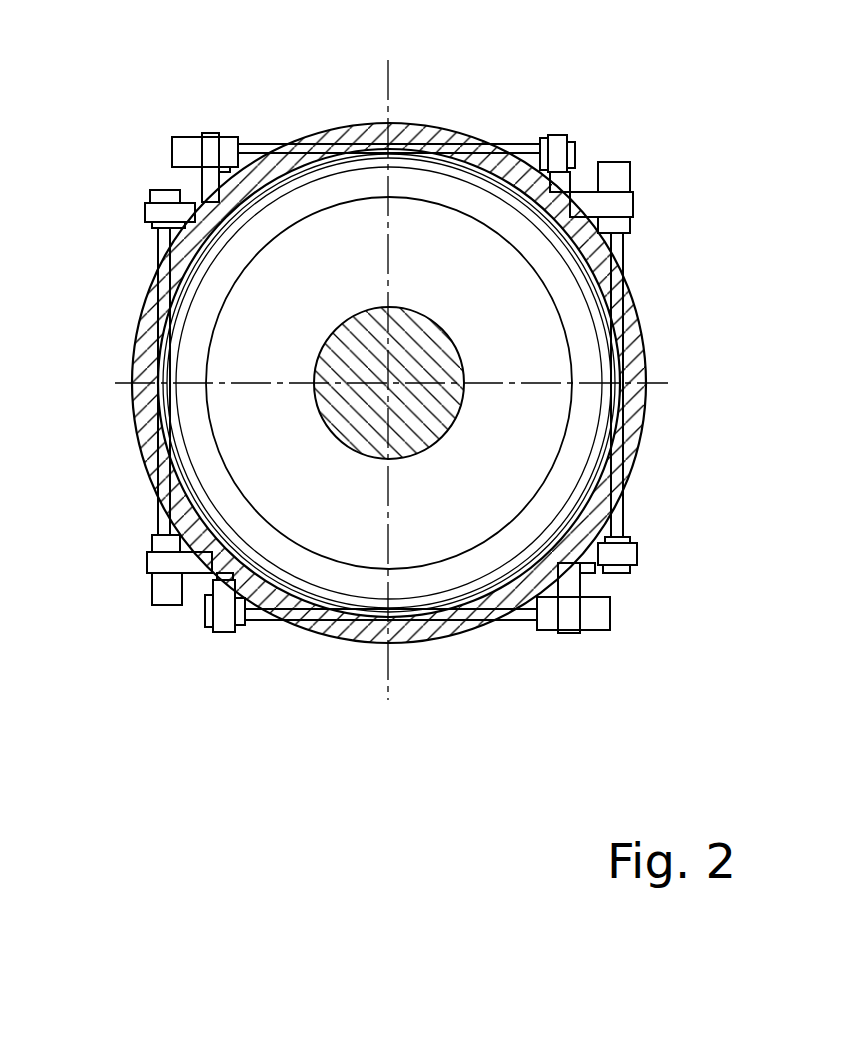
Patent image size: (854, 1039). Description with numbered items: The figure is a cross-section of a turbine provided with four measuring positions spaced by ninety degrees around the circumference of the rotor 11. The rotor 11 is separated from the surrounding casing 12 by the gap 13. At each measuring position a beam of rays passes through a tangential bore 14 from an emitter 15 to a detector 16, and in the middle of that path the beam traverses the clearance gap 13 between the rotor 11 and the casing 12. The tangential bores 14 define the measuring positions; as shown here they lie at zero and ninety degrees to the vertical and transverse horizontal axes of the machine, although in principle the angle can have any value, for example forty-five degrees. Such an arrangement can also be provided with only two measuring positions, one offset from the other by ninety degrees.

The rotor 11 is at (567, 273).
The casing 12 is at (630, 318).
The gap 13 is at (388, 148).
The tangential bore 14 is at (468, 150).
The emitter 15 is at (185, 148).
The detector 16 is at (568, 148).